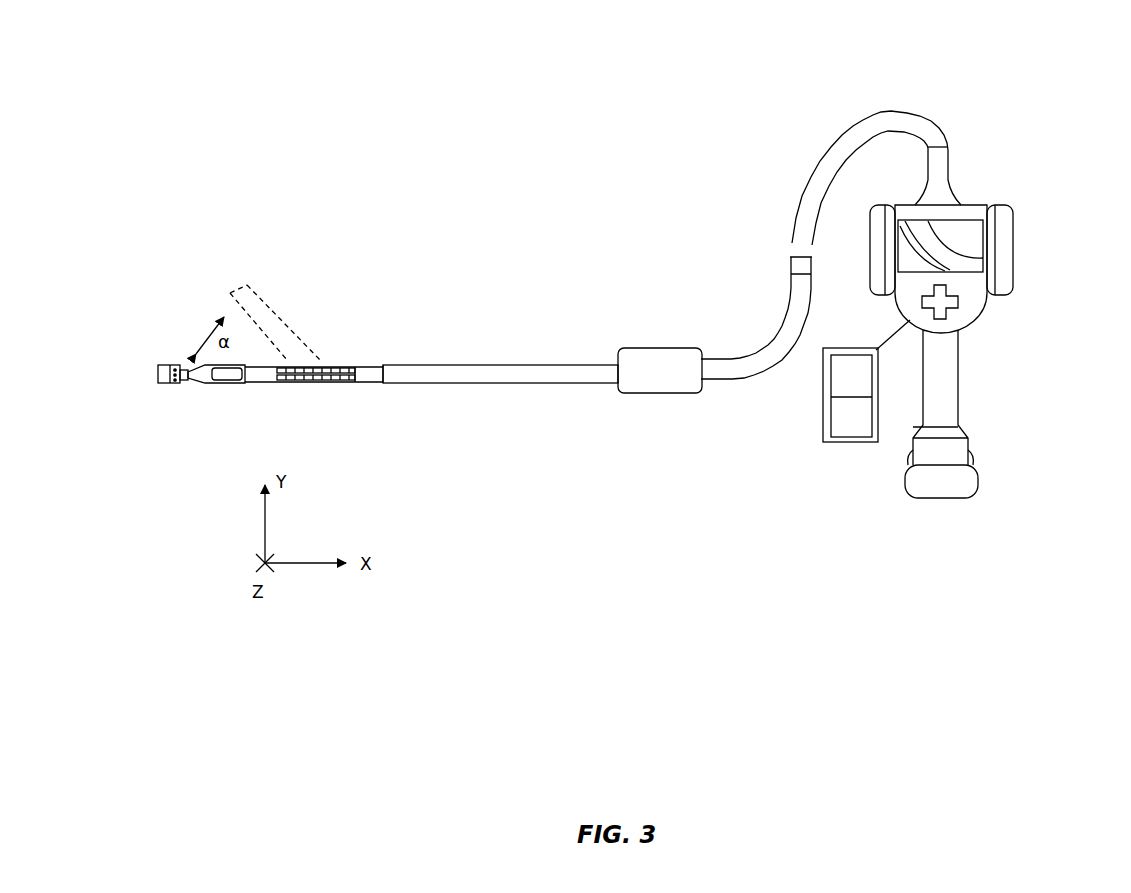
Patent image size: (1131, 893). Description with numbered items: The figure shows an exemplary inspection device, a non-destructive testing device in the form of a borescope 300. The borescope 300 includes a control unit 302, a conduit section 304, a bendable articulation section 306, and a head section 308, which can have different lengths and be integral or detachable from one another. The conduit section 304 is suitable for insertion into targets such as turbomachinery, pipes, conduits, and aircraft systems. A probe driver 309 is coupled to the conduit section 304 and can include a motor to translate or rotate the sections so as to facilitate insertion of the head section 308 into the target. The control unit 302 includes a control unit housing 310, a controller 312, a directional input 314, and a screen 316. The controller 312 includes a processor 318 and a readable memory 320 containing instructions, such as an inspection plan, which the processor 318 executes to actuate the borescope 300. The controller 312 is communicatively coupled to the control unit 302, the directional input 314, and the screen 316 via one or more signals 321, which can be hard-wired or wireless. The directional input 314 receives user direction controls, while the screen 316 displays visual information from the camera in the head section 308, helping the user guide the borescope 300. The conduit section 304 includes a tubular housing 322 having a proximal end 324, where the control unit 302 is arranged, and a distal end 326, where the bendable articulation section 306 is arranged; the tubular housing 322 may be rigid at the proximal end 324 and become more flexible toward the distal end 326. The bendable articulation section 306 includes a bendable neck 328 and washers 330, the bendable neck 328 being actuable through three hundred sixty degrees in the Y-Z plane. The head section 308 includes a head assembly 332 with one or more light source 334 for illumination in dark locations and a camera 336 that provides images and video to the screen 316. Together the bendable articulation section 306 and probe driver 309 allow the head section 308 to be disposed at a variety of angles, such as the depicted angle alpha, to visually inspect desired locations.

The borescope 300 is at (276, 243).
The control unit 302 is at (1022, 328).
The conduit section 304 is at (800, 418).
The bendable articulation section 306 is at (355, 415).
The head section 308 is at (265, 415).
The probe driver 309 is at (660, 370).
The control unit housing 310 is at (975, 492).
The controller 312 is at (852, 443).
The directional input 314 is at (957, 297).
The screen 316 is at (942, 222).
The processor 318 is at (836, 350).
The readable memory 320 is at (825, 420).
The signals 321 is at (890, 340).
The tubular housing 322 is at (477, 365).
The proximal end 324 is at (900, 113).
The distal end 326 is at (390, 365).
The bendable neck 328 is at (360, 366).
The washers 330 is at (335, 366).
The head assembly 332 is at (152, 393).
The light source 334 is at (158, 365).
The camera 336 is at (184, 366).